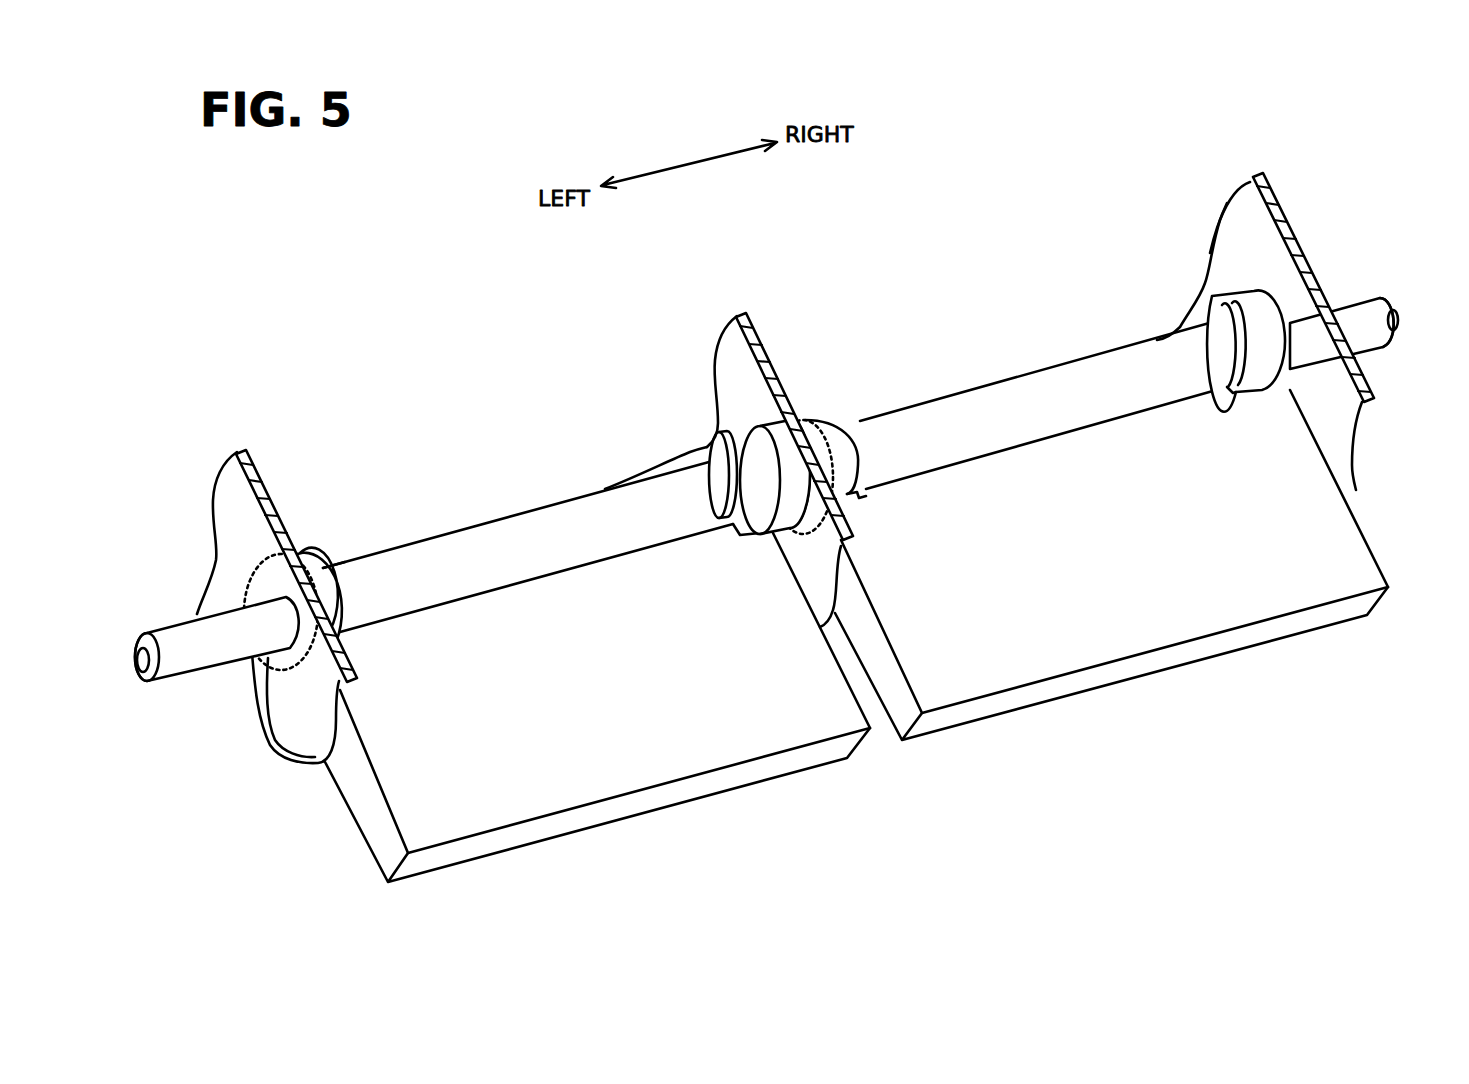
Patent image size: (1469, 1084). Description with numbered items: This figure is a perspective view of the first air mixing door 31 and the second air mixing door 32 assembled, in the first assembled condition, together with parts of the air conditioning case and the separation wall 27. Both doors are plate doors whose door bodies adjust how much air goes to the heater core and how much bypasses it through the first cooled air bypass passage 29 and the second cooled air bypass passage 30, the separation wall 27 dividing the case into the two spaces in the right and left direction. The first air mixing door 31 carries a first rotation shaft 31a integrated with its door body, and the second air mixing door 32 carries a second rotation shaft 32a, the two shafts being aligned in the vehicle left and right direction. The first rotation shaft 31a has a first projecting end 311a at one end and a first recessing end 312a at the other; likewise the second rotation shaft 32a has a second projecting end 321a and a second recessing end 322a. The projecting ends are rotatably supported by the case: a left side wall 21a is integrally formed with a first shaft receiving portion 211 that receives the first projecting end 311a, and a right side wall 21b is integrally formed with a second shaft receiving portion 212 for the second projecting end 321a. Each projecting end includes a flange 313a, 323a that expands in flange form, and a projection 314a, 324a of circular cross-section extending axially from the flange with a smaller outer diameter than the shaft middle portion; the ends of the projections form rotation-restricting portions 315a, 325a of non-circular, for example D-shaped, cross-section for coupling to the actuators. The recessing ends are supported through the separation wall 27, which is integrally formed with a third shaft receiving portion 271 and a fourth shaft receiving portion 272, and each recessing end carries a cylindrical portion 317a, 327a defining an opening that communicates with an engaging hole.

The left side wall 21a is at (230, 495).
The right side wall 21b is at (1247, 223).
The first shaft receiving portion 211 is at (232, 573).
The second shaft receiving portion 212 is at (1207, 253).
The separation wall 27 is at (733, 343).
The third shaft receiving portion 271 is at (712, 385).
The fourth shaft receiving portion 272 is at (808, 410).
The first cooled air bypass passage 29 is at (510, 442).
The second cooled air bypass passage 30 is at (960, 330).
The first air mixing door 31 is at (664, 814).
The first rotation shaft 31a is at (477, 524).
The first projecting end 311a is at (337, 572).
The first recessing end 312a is at (710, 464).
The flange 313a is at (300, 552).
The projection 314a is at (265, 758).
The rotation-restricting portion 315a is at (205, 672).
The cylindrical portion 317a is at (757, 424).
The second air mixing door 32 is at (1148, 696).
The second rotation shaft 32a is at (1040, 365).
The second projecting end 321a is at (1193, 332).
The second recessing end 322a is at (847, 424).
The flange 323a is at (1211, 297).
The projection 324a is at (1348, 310).
The rotation-restricting portion 325a is at (1366, 345).
The cylindrical portion 327a is at (817, 413).